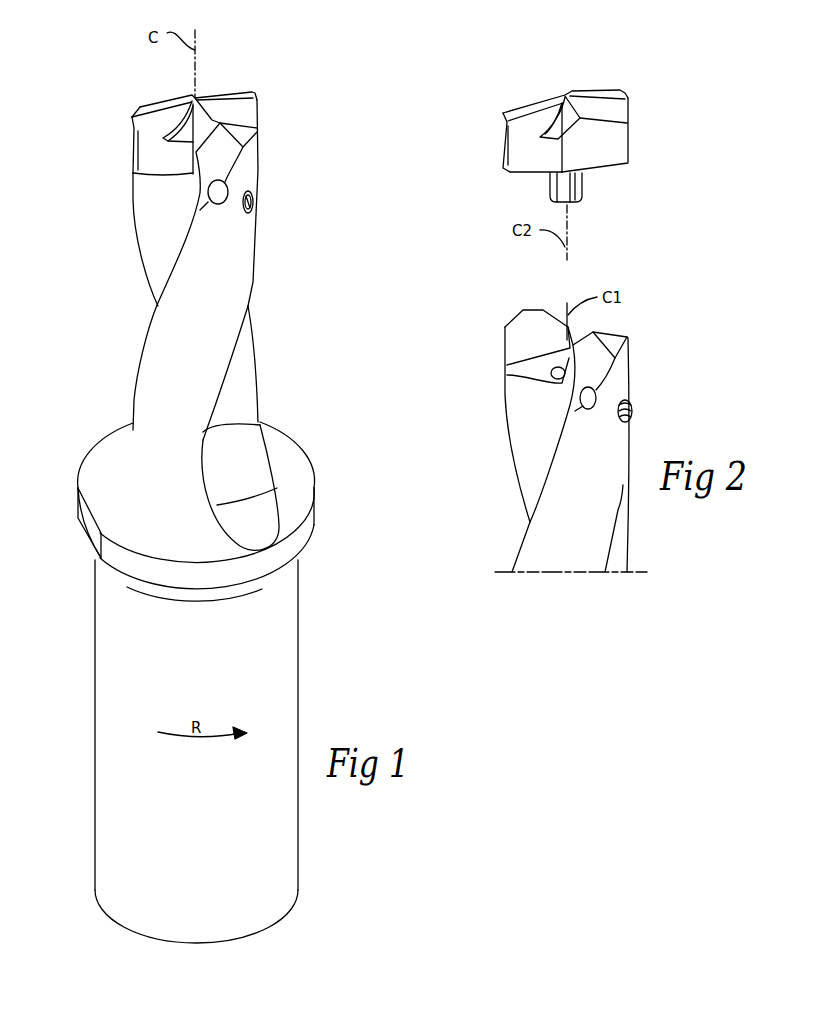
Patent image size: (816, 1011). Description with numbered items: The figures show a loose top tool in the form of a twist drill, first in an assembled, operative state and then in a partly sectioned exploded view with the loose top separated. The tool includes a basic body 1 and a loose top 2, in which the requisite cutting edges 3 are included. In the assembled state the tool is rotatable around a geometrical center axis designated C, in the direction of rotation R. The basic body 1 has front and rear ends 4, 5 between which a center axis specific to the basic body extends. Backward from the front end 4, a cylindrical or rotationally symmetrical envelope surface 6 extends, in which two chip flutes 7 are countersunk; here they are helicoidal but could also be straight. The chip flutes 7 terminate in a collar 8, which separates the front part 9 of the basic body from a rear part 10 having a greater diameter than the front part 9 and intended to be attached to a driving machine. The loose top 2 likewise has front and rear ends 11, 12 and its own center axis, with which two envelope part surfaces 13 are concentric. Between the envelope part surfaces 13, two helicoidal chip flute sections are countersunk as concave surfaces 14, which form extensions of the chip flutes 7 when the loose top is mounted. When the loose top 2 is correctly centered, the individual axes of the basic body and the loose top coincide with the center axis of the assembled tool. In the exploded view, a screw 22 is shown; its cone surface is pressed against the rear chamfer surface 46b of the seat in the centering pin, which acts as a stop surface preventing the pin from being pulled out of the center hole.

In FIG. 1, the basic body 1 is at (78, 669).
In FIG. 1, the loose top 2 is at (278, 98).
In FIG. 1, the cutting edges 3 is at (226, 90).
In FIG. 1, the front end 4 is at (259, 140).
In FIG. 2, the front end 4 is at (633, 357).
In FIG. 1, the rear end 5 is at (260, 937).
In FIG. 1, the envelope surface 6 is at (194, 349).
In FIG. 2, the envelope surface 6 is at (580, 529).
In FIG. 1, the chip flutes 7 is at (157, 254).
In FIG. 1, the collar 8 is at (318, 488).
In FIG. 1, the front part 9 is at (253, 278).
In FIG. 2, the front part 9 is at (508, 437).
In FIG. 1, the rear part 10 is at (299, 683).
In FIG. 2, the front end 11 is at (572, 82).
In FIG. 2, the rear end 12 is at (615, 165).
In FIG. 2, the envelope part surfaces 13 is at (503, 128).
In FIG. 2, the concave surfaces 14 is at (541, 161).
In FIG. 2, the screw 22 is at (634, 410).
In FIG. 2, the chamfer surface 46b is at (585, 183).